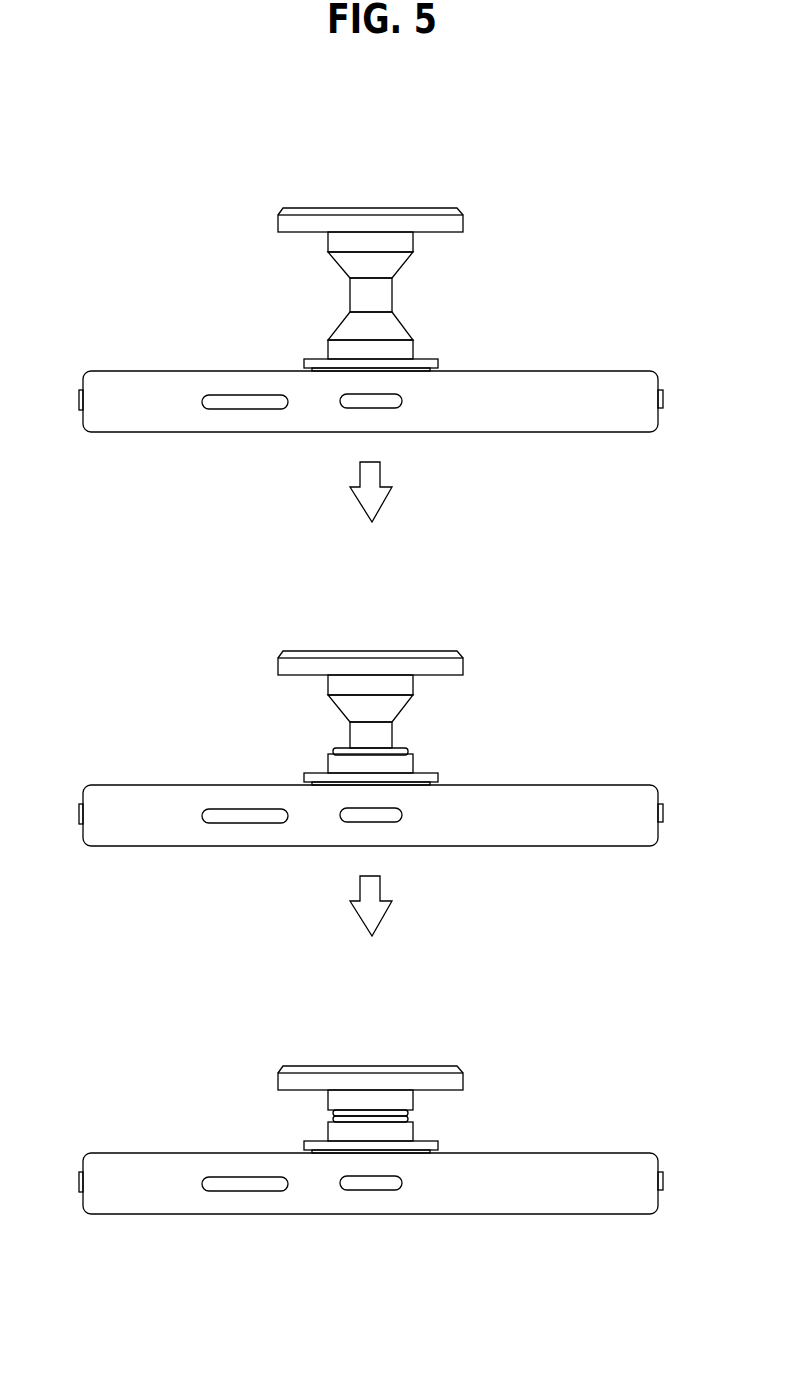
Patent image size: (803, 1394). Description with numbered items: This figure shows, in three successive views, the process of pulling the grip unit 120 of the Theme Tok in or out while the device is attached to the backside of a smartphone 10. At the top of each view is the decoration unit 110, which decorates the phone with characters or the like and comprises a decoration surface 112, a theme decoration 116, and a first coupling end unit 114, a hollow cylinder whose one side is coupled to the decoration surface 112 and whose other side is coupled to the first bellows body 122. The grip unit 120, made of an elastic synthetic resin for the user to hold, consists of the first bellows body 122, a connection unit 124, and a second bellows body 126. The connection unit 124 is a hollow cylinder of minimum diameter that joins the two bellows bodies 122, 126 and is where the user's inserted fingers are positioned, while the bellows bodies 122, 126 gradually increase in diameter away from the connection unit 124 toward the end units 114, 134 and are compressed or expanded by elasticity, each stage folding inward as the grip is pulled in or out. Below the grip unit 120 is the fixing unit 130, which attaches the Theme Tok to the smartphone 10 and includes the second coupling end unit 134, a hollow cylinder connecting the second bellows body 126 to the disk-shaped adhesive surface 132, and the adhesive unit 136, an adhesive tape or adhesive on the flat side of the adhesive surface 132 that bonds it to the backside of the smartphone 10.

The smartphone 10 is at (630, 420).
The decoration unit 110 is at (452, 165).
The decoration surface 112 is at (360, 222).
The first coupling end unit 114 is at (403, 238).
The theme decoration 116 is at (317, 212).
The grip unit 120 is at (488, 240).
The first bellows body 122 is at (393, 265).
The connection unit 124 is at (383, 300).
The second bellows body 126 is at (398, 332).
The fixing unit 130 is at (572, 462).
The adhesive surface 132 is at (413, 362).
The second coupling end unit 134 is at (402, 350).
The adhesive unit 136 is at (382, 371).